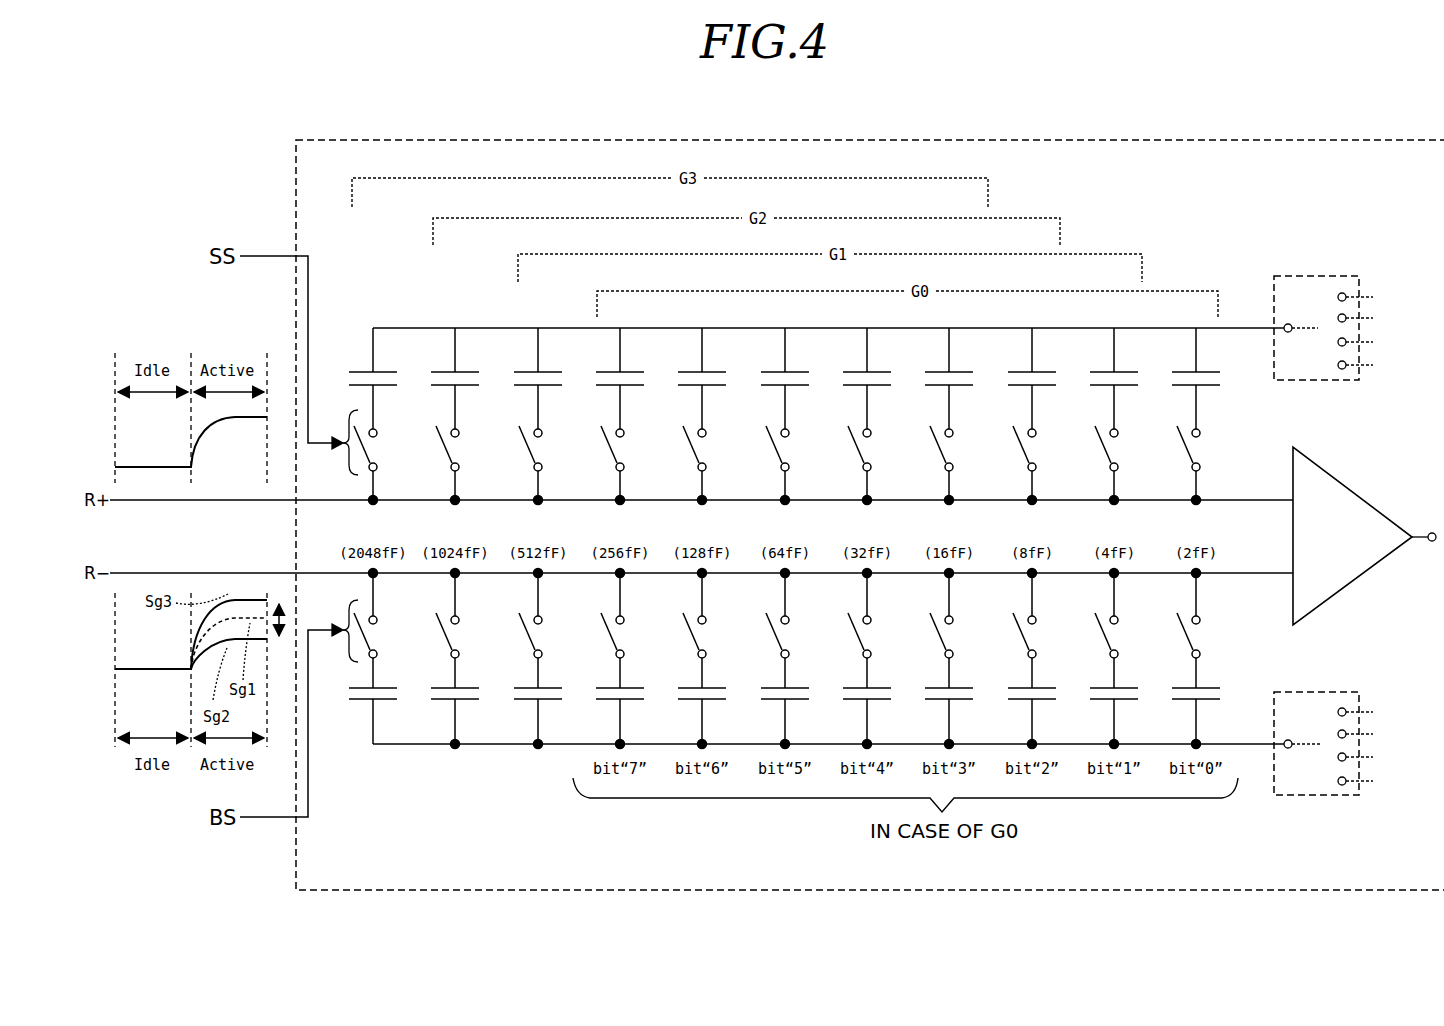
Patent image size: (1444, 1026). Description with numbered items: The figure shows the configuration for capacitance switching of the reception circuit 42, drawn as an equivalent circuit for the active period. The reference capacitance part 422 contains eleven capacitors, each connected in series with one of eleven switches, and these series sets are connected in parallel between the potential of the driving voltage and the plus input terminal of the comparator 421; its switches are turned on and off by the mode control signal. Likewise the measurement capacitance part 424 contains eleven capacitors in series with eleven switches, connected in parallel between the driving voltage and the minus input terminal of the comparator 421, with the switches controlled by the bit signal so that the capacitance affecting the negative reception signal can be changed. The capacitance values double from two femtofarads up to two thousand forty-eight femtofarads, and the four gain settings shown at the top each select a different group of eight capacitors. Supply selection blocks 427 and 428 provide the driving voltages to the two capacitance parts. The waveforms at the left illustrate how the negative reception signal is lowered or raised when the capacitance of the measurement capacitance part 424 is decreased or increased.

The reception circuit 42 is at (838, 141).
The comparator 421 is at (1357, 488).
The reference capacitance part 422 is at (1240, 337).
The measurement capacitance part 424 is at (1240, 585).
The first voltage selection circuit 427 is at (1300, 276).
The second voltage selection circuit 428 is at (1312, 796).